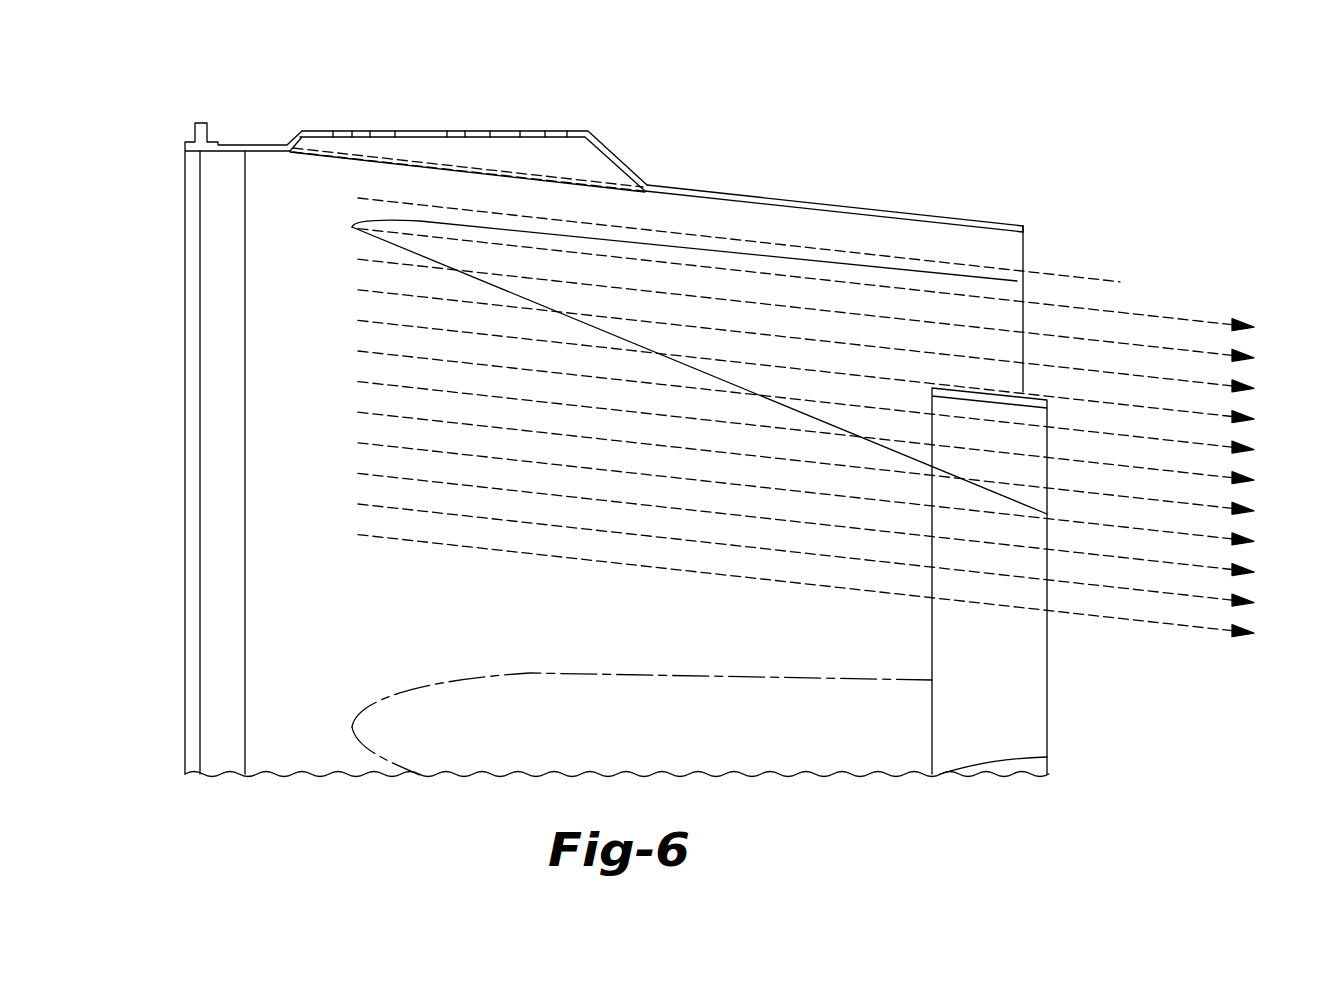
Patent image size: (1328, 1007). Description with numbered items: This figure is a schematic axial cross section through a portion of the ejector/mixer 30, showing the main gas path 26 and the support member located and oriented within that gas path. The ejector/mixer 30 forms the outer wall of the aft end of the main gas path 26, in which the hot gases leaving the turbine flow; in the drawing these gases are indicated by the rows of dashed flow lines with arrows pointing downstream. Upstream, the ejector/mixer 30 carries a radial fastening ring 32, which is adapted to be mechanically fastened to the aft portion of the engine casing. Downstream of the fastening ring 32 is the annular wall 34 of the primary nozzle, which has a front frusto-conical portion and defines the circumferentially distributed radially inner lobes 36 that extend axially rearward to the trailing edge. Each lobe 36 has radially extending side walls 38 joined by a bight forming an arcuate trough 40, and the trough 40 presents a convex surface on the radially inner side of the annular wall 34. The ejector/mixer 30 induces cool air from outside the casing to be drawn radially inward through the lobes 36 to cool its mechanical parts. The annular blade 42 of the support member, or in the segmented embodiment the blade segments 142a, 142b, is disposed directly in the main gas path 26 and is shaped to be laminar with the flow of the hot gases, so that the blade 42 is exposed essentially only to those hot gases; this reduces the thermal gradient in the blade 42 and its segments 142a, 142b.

The main gas path 26 is at (970, 245).
The ejector/mixer 30 is at (650, 176).
The fastening ring 32 is at (200, 123).
The annular wall 34 is at (462, 131).
The radially inner lobes 36 is at (972, 215).
The side walls 38 is at (1024, 232).
The arcuate trough 40 is at (830, 207).
The annular blade 42 is at (1037, 398).
The blade segment 142a is at (806, 341).
The blade segment 142b is at (806, 524).